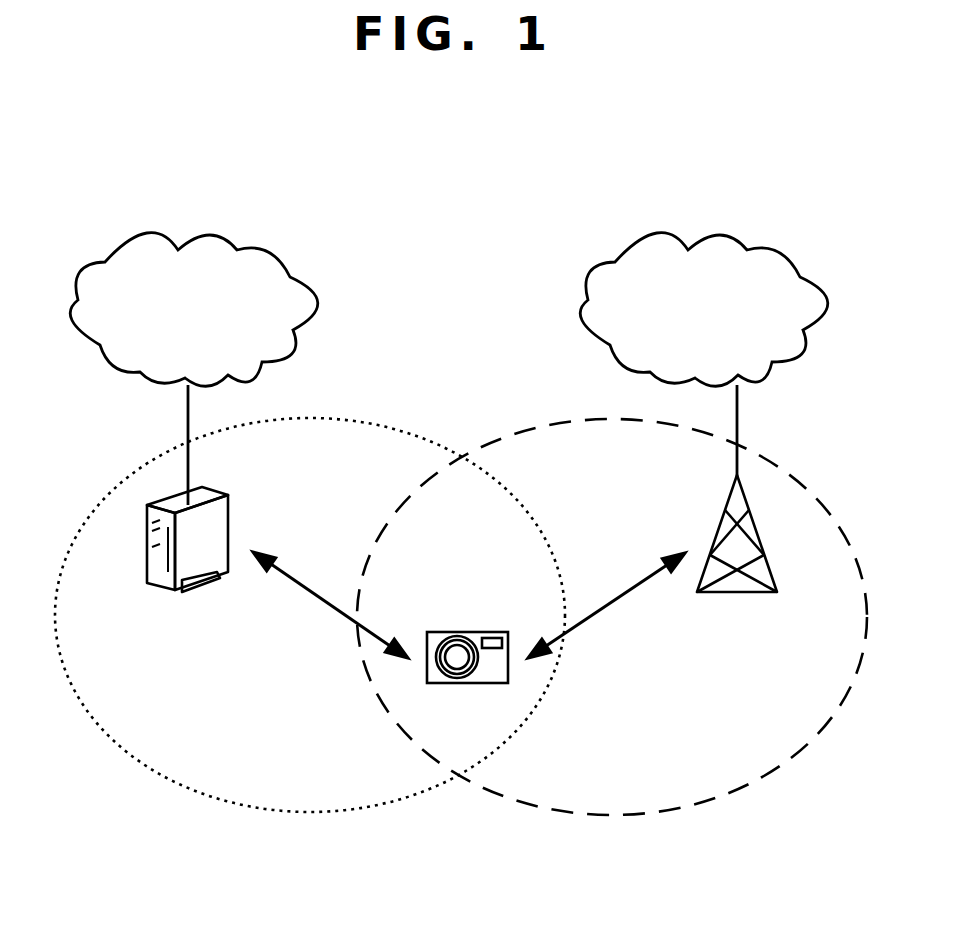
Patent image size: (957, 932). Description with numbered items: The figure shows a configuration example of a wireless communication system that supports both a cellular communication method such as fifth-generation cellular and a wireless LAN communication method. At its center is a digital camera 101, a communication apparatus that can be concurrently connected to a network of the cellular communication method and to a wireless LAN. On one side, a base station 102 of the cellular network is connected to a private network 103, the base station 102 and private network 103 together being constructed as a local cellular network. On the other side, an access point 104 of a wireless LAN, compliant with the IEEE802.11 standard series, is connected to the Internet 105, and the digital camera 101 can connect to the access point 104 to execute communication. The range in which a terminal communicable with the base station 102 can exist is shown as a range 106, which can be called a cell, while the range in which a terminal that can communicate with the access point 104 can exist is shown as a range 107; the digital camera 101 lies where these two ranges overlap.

The digital camera 101 is at (470, 632).
The base station 102 is at (735, 597).
The private network 103 is at (740, 232).
The access point 104 is at (172, 590).
The Internet 105 is at (195, 232).
The range 106 is at (620, 815).
The range 107 is at (304, 812).